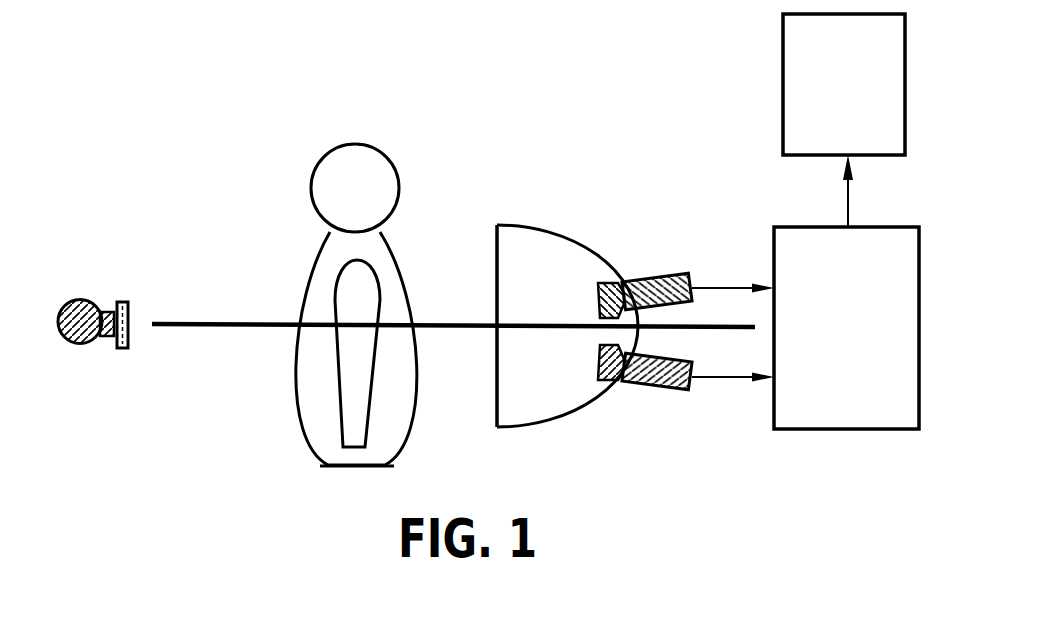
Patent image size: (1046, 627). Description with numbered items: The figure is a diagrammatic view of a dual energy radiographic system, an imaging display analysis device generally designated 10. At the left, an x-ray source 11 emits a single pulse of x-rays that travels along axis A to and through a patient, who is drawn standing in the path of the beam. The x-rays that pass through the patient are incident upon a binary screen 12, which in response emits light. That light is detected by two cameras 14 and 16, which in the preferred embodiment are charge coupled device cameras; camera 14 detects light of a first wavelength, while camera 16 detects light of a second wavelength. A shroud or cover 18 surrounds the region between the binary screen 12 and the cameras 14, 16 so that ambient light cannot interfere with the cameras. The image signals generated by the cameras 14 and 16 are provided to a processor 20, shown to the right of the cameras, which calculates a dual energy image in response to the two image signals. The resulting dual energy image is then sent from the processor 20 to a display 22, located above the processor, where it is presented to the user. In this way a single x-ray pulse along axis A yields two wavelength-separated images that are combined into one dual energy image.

The imaging display analysis device 10 is at (522, 123).
The X-ray source 11 is at (93, 344).
The binary screen 12 is at (540, 316).
The camera 14 is at (640, 283).
The camera 16 is at (640, 390).
The shroud or cover 18 is at (549, 232).
The processor 20 is at (806, 238).
The display 22 is at (785, 63).
The axis A is at (234, 322).